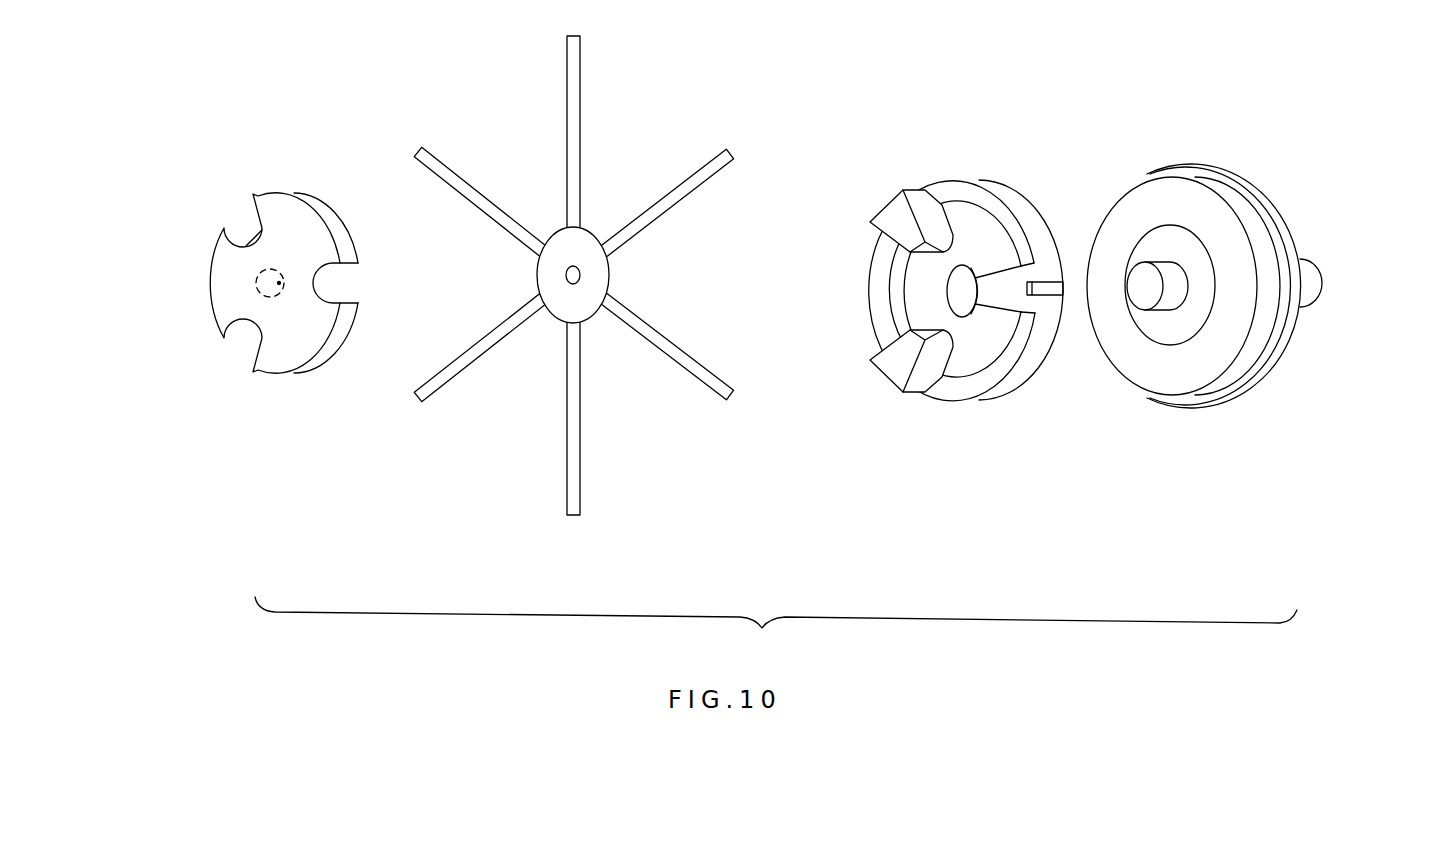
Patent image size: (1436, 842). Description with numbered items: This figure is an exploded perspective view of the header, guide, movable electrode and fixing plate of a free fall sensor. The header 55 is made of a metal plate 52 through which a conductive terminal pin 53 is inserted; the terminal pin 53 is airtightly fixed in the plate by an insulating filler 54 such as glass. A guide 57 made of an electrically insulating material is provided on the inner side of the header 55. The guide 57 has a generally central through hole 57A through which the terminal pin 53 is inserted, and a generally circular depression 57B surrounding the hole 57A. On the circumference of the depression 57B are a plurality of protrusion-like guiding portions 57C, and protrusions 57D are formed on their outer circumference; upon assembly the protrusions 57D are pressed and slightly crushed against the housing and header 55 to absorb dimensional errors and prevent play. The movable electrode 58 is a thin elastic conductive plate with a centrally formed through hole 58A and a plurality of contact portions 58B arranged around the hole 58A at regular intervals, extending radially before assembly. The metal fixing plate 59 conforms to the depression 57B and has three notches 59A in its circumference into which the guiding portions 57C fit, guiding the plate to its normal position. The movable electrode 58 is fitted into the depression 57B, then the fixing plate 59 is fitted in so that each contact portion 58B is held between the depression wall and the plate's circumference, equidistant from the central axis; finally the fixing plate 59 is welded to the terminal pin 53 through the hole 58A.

The metal plate 52 is at (1230, 238).
The terminal pin 53 is at (1170, 297).
The insulating filler 54 is at (1197, 308).
The header 55 is at (1251, 299).
The guide 57 is at (953, 277).
The through hole 57A is at (962, 277).
The depression 57B is at (975, 350).
The guiding portions 57C is at (890, 213).
The protrusions 57D is at (1046, 288).
The movable electrode 58 is at (595, 275).
The through hole 58A is at (565, 275).
The contact portions 58B is at (677, 195).
The fixing plate 59 is at (266, 246).
The notches 59A is at (258, 242).